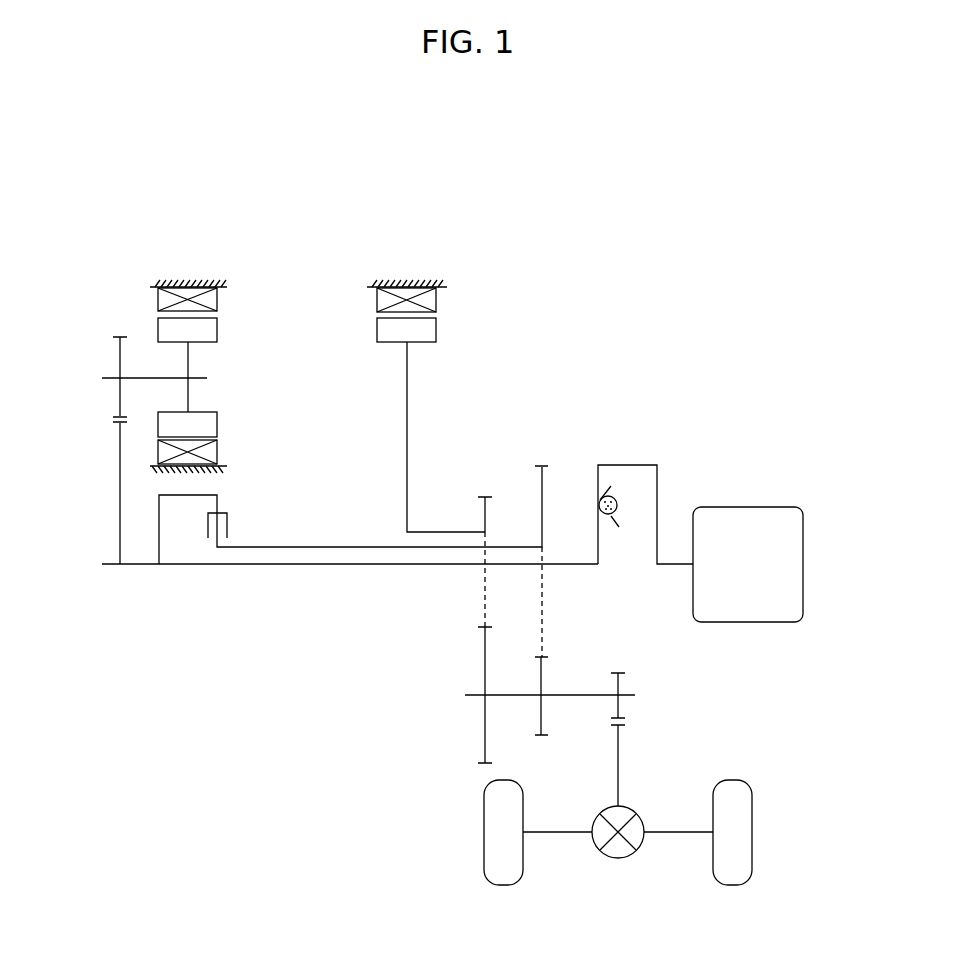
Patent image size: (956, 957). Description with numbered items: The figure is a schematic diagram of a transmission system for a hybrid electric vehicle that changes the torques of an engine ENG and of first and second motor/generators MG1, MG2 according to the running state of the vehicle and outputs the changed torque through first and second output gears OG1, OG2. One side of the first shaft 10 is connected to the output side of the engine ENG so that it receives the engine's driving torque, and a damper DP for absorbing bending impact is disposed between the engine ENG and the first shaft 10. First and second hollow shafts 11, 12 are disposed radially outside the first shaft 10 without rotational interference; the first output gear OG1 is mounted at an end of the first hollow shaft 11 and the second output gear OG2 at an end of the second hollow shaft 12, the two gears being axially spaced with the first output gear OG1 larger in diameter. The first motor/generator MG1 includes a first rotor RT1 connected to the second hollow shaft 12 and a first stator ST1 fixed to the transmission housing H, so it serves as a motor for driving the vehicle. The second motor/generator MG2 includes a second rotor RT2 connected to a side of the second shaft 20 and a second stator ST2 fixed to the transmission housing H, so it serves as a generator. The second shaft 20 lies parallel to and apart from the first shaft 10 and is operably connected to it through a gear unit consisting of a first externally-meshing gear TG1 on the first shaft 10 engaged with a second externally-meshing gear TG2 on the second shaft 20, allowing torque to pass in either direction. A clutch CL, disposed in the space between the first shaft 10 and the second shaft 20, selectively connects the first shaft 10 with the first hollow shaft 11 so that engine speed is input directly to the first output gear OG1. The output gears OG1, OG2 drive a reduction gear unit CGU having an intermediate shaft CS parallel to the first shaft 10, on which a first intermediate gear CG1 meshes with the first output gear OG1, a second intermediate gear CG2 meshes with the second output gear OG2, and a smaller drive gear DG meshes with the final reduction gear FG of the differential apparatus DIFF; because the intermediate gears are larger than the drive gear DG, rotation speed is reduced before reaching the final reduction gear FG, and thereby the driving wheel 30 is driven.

The transmission housing H is at (206, 282).
The second motor/generator MG2 is at (191, 346).
The second stator ST2 is at (158, 300).
The second rotor RT2 is at (158, 330).
The second externally-meshing gear TG2 is at (116, 358).
The second shaft 20 is at (135, 378).
The first externally-meshing gear TG1 is at (118, 523).
The first shaft 10 is at (294, 567).
The first hollow shaft 11 is at (380, 549).
The second hollow shaft 12 is at (446, 534).
The clutch CL is at (236, 521).
The first motor/generator MG1 is at (415, 285).
The first stator ST1 is at (377, 290).
The first rotor RT1 is at (377, 325).
The second output gear OG2 is at (484, 508).
The first output gear OG1 is at (545, 490).
The damper DP is at (619, 531).
The engine ENG is at (748, 564).
The reduction gear unit CGU is at (518, 695).
The second intermediate gear CG2 is at (482, 660).
The first intermediate gear CG1 is at (545, 672).
The intermediate shaft CS is at (508, 698).
The drive gear DG is at (620, 688).
The final reduction gear FG is at (620, 755).
The differential apparatus DIFF is at (641, 802).
The driving wheel 30 is at (482, 866).